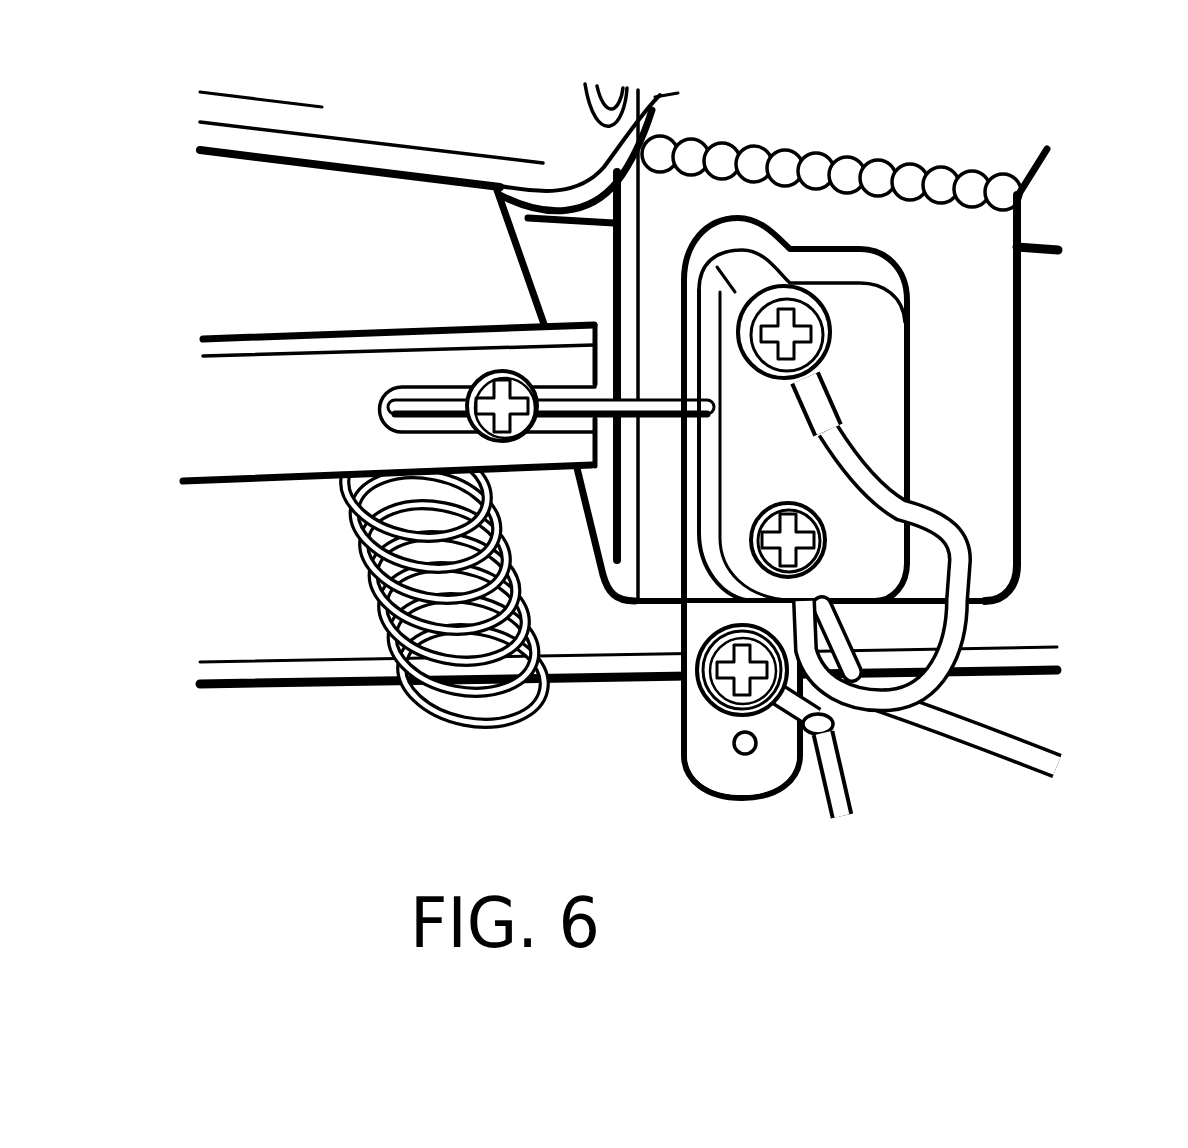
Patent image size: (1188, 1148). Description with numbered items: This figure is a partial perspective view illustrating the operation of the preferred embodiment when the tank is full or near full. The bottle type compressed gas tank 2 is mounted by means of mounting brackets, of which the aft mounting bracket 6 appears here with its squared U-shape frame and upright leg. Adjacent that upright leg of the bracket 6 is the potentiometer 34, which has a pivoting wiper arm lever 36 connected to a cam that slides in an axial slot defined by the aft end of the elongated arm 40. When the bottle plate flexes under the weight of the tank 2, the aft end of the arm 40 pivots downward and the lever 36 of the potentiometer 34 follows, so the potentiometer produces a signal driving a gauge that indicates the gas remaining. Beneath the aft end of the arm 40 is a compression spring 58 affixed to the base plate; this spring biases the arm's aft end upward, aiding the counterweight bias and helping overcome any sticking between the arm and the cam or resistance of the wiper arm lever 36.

The compressed gas tank 2 is at (453, 97).
The aft mounting bracket 6 is at (982, 323).
The potentiometer 34 is at (880, 393).
The wiper arm lever 36 is at (663, 385).
The elongated arm 40 is at (285, 421).
The compression spring 58 is at (367, 570).